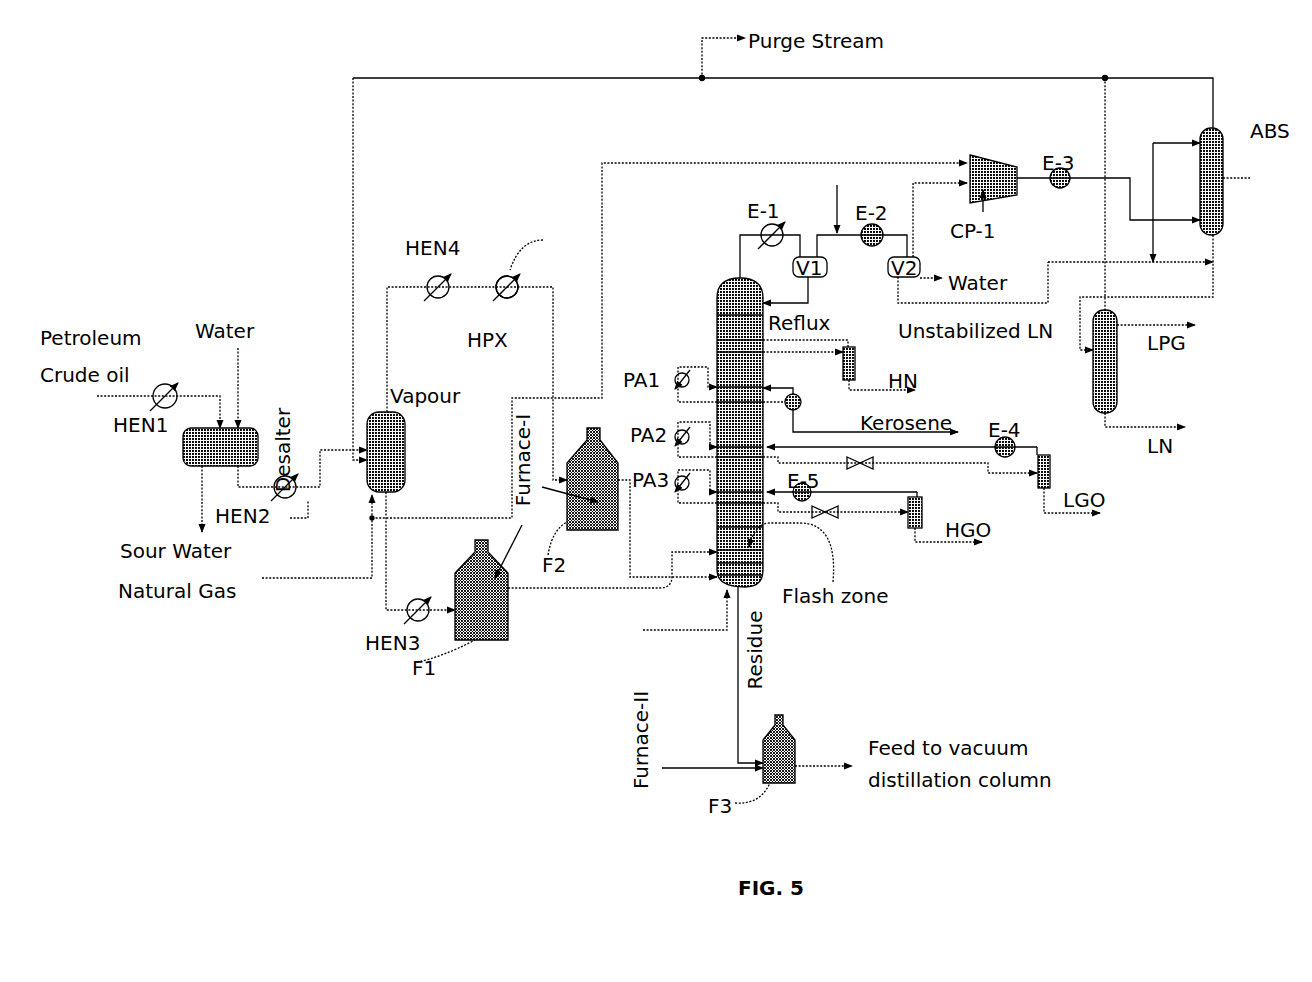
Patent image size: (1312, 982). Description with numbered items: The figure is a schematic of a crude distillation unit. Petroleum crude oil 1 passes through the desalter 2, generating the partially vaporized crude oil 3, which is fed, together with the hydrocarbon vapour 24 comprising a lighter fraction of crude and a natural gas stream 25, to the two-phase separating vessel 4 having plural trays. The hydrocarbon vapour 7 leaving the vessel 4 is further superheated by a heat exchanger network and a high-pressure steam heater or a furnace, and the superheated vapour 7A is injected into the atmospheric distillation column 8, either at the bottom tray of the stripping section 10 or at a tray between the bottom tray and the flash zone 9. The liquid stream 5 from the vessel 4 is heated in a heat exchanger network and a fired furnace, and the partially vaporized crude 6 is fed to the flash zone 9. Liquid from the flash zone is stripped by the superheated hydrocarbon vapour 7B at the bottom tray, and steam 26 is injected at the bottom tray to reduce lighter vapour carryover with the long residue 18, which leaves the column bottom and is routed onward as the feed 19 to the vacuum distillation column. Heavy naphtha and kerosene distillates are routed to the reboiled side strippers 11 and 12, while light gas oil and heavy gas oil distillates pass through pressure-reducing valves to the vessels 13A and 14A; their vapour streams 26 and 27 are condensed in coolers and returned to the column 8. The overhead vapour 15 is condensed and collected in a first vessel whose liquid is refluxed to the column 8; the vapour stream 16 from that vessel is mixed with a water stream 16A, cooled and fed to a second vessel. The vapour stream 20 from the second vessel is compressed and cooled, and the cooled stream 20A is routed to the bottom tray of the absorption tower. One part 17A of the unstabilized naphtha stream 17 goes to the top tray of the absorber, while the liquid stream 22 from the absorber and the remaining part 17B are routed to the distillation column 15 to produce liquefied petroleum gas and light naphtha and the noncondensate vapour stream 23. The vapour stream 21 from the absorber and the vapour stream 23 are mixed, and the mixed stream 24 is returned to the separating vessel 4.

The petroleum crude oil feed line 1 is at (105, 396).
The desalter 2 is at (183, 448).
The partially vaporized crude oil 3 is at (320, 450).
The two phases separating vessel 4 is at (405, 475).
The liquid stream 5 is at (387, 538).
The partially vaporized crude 6 is at (662, 588).
The hydrocarbon vapour 7 is at (387, 333).
The superheated vapour 7A is at (536, 262).
The superheated hydrocarbon vapour 7B is at (630, 527).
The atmospheric distillation column 8 is at (717, 322).
The flash zone 9 is at (717, 525).
The stripping section 10 is at (763, 573).
The side stripper 11 is at (856, 350).
The side stripper 12 is at (803, 400).
The vessel 13A is at (1050, 468).
The vessel 14A is at (922, 512).
The overhead vapour 15 is at (740, 250).
The vapour stream 16 is at (808, 257).
The water stream 16A is at (829, 199).
The unstabilized naphtha stream 17 is at (898, 303).
The one part of unstabilized naphtha stream 17A is at (1153, 152).
The remaining part of unstabilized naphtha stream 17B is at (1168, 262).
The long residue 18 is at (738, 712).
The feed line to vacuum distillation column 19 is at (828, 764).
The vapour stream 20 is at (930, 182).
The cooled stream 20A is at (1083, 180).
The vapour stream 21 is at (1200, 88).
The liquid stream 22 is at (1151, 260).
The noncondensate vapour stream 23 is at (1105, 128).
The mixed stream 24 is at (570, 78).
The natural gas stream 25 is at (290, 578).
The steam 26 is at (1037, 446).
The vapour stream 27 is at (870, 464).